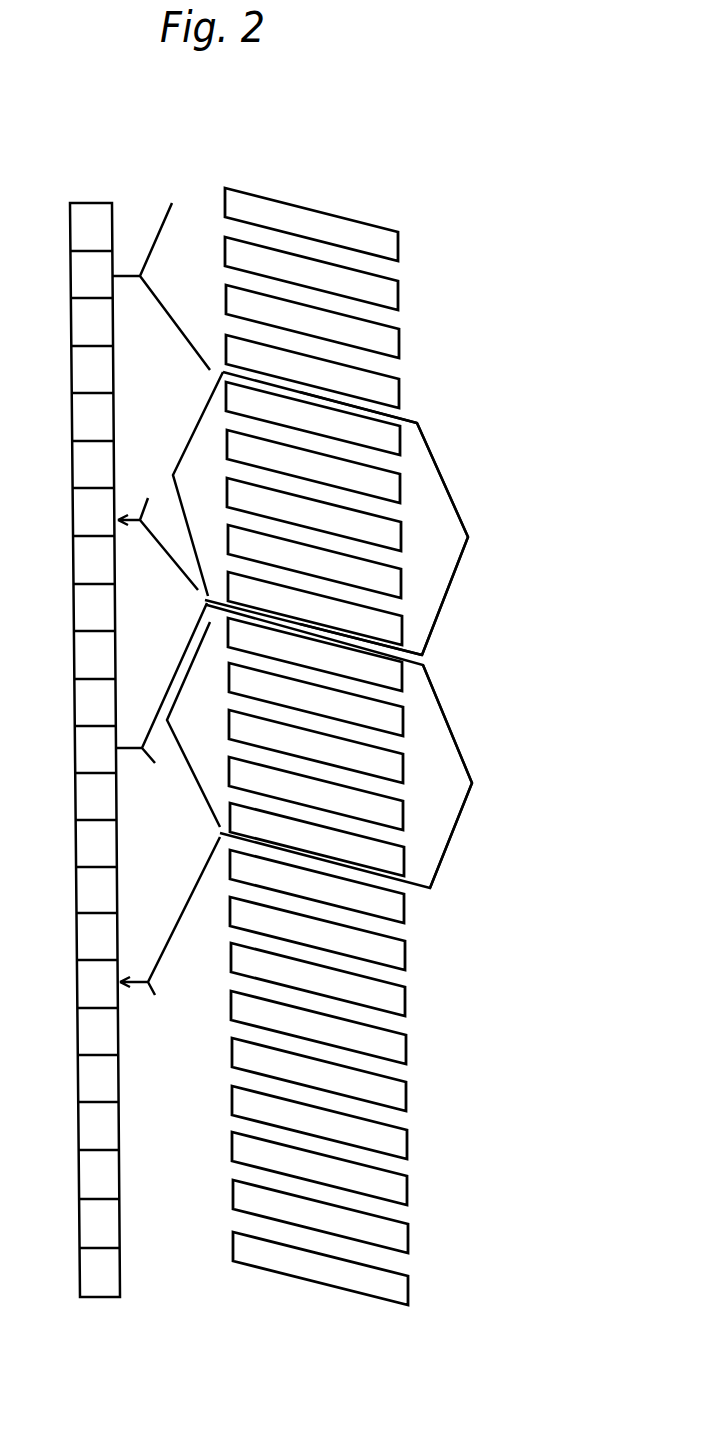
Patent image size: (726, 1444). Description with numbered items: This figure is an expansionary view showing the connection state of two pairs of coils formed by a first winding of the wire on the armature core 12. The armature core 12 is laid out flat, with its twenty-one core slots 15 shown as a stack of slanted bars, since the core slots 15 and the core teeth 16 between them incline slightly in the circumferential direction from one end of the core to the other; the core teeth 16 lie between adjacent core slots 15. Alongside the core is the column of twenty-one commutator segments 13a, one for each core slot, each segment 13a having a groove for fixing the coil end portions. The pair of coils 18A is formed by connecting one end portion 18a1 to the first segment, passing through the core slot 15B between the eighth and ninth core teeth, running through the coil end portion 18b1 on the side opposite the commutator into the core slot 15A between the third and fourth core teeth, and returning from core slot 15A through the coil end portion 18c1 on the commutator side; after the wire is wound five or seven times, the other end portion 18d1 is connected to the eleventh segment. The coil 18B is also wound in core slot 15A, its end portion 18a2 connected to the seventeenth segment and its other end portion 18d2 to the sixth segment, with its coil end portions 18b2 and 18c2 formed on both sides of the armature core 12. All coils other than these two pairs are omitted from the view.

The segment 13a is at (88, 208).
The armature core 12 is at (321, 186).
The core teeth 16 is at (358, 233).
The core slots 15 is at (387, 267).
The core slot 15A is at (388, 640).
The core slot 15B is at (385, 393).
The coil 18A is at (457, 474).
The coil 18B is at (478, 750).
The coil end portion 18b1 is at (468, 527).
The coil end portion 18b2 is at (457, 827).
The end portion 18a1 is at (128, 747).
The end portion 18a2 is at (137, 987).
The coil end portion 18c1 is at (190, 440).
The coil end portion 18c2 is at (192, 778).
The other end portion 18d1 is at (158, 307).
The other end portion 18d2 is at (132, 527).